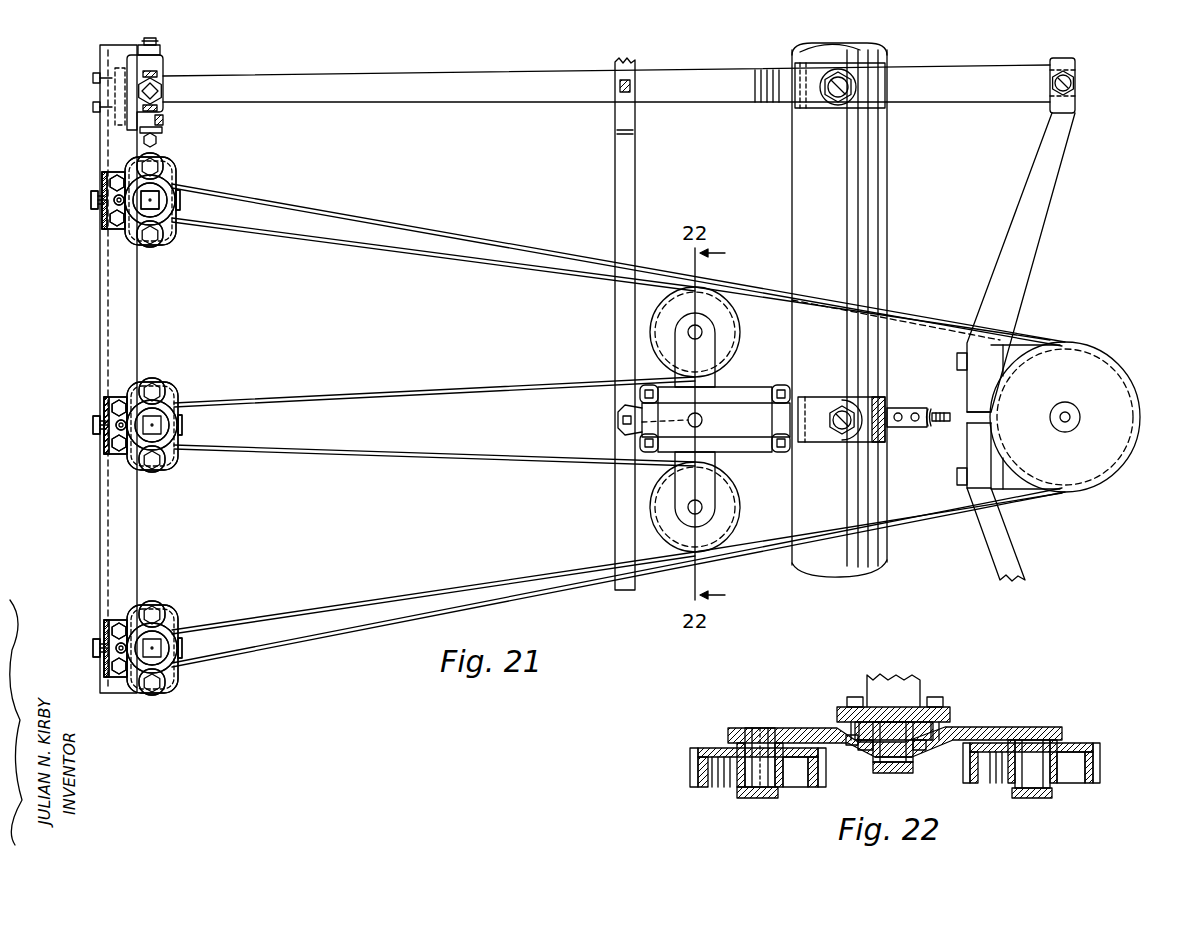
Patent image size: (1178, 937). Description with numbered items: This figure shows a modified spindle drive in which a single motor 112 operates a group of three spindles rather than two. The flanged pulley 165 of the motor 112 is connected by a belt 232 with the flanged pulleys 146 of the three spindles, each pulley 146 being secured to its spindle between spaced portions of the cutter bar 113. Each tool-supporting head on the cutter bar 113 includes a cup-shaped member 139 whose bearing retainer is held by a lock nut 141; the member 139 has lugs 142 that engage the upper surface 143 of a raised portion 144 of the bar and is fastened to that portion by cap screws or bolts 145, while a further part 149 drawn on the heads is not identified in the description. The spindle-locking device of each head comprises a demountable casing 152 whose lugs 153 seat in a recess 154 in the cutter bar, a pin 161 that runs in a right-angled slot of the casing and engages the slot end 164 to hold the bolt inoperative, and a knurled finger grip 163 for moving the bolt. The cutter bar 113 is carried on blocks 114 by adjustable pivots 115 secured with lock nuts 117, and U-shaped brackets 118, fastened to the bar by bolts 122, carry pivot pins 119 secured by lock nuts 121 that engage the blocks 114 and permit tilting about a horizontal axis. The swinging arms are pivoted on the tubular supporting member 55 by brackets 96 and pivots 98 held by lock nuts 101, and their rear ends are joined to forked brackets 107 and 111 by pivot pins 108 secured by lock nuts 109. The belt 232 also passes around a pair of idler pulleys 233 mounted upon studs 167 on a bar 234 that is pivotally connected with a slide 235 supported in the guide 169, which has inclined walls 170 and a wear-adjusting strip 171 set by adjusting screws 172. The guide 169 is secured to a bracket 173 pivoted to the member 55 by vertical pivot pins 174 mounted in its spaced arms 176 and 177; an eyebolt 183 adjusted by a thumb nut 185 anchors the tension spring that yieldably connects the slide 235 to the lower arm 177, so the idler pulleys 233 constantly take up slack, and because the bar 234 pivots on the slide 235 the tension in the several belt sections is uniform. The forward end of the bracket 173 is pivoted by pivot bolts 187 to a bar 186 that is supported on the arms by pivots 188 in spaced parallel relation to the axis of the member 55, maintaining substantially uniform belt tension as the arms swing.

In FIG. 21, the tubular supporting member 55 is at (880, 172).
In FIG. 21, the bracket 96 is at (816, 110).
In FIG. 21, the pivot 98 is at (851, 90).
In FIG. 21, the lock nut 101 is at (856, 96).
In FIG. 21, the forked bracket 107 is at (1015, 545).
In FIG. 21, the pivot pin 108 is at (1075, 90).
In FIG. 21, the lock nut 109 is at (1050, 100).
In FIG. 21, the bracket 111 is at (1045, 210).
In FIG. 21, the motor 112 is at (1068, 378).
In FIG. 21, the cutter bar 113 is at (100, 338).
In FIG. 21, the block 114 is at (163, 104).
In FIG. 21, the pivot 115 is at (163, 81).
In FIG. 21, the lock nut 117 is at (165, 95).
In FIG. 21, the U-shaped bracket 118 is at (163, 120).
In FIG. 21, the pivot pin 119 is at (157, 74).
In FIG. 21, the lock nut 121 is at (160, 48).
In FIG. 21, the bolt 122 is at (93, 78).
In FIG. 21, the cup-shaped member 139 is at (180, 218).
In FIG. 21, the lock nut 141 is at (152, 196).
In FIG. 21, the lug 142 is at (160, 243).
In FIG. 21, the upper surface 143 is at (176, 180).
In FIG. 21, the raised portion 144 is at (180, 186).
In FIG. 21, the cap screw 145 is at (165, 230).
In FIG. 21, the flanged pulley 146 is at (178, 208).
In FIG. 21, the tab 149 is at (181, 200).
In FIG. 21, the demountable casing 152 is at (118, 178).
In FIG. 21, the lug 153 is at (118, 232).
In FIG. 21, the recess 154 is at (110, 216).
In FIG. 21, the pin 161 is at (108, 210).
In FIG. 21, the knurled finger grip 163 is at (91, 200).
In FIG. 21, the end of slot 164 is at (108, 192).
In FIG. 21, the flanged pulley 165 is at (1075, 432).
In FIG. 21, the stud 167 is at (640, 432).
In FIG. 22, the stud 167 is at (760, 787).
In FIG. 22, the guide 169 is at (935, 733).
In FIG. 21, the inclined wall 170 is at (870, 400).
In FIG. 22, the strip 171 is at (876, 738).
In FIG. 22, the adjusting screw 172 is at (845, 757).
In FIG. 21, the bracket 173 is at (750, 405).
In FIG. 22, the bracket 173 is at (915, 685).
In FIG. 21, the vertical pivot pin 174 is at (838, 408).
In FIG. 21, the arm of bracket 176 is at (822, 444).
In FIG. 21, the lower arm of bracket 177 is at (906, 408).
In FIG. 21, the eyebolt 183 is at (960, 432).
In FIG. 21, the thumb nut 185 is at (940, 412).
In FIG. 21, the bar 186 is at (635, 172).
In FIG. 21, the pivot bolt 187 is at (618, 420).
In FIG. 21, the pivot 188 is at (632, 88).
In FIG. 21, the belt 232 is at (487, 236).
In FIG. 21, the idler pulley 233 is at (650, 332).
In FIG. 22, the idler pulley 233 is at (690, 780).
In FIG. 21, the bar 234 is at (708, 345).
In FIG. 22, the bar 234 is at (793, 728).
In FIG. 22, the slide 235 is at (930, 758).